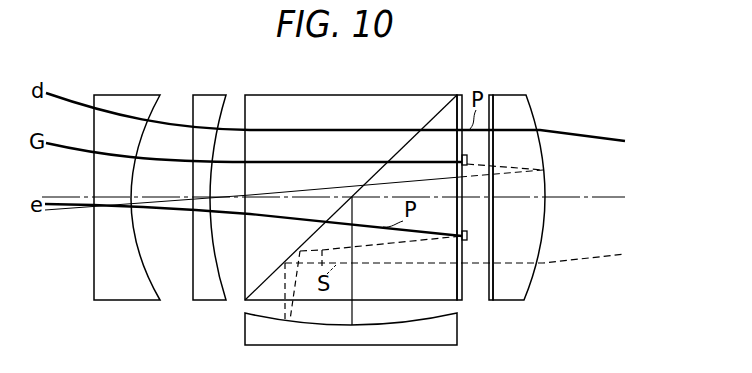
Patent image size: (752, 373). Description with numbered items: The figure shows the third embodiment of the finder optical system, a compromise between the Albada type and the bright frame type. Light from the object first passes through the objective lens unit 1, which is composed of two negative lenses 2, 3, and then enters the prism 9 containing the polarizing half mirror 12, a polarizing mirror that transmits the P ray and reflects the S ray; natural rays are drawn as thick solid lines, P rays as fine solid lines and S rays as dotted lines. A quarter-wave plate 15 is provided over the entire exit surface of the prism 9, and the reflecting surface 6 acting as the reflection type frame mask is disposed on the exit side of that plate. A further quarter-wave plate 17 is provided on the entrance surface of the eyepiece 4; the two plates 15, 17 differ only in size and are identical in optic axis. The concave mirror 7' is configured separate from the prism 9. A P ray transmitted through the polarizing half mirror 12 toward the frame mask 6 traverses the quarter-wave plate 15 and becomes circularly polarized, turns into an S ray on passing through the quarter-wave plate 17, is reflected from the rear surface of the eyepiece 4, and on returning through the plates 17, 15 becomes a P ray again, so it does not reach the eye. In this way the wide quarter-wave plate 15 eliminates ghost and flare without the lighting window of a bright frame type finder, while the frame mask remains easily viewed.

The objective lens unit 1 is at (230, 87).
The negative lens 2 is at (125, 300).
The negative lens 3 is at (207, 300).
The eyepiece 4 is at (517, 94).
The reflecting surface (reflection type frame mask) 6 is at (467, 161).
The prism 9 is at (393, 94).
The polarizing half mirror 12 is at (408, 144).
The quarter-wave plate 15 is at (462, 94).
The quarter-wave plate 17 is at (489, 303).
The concave mirror 7' is at (351, 343).